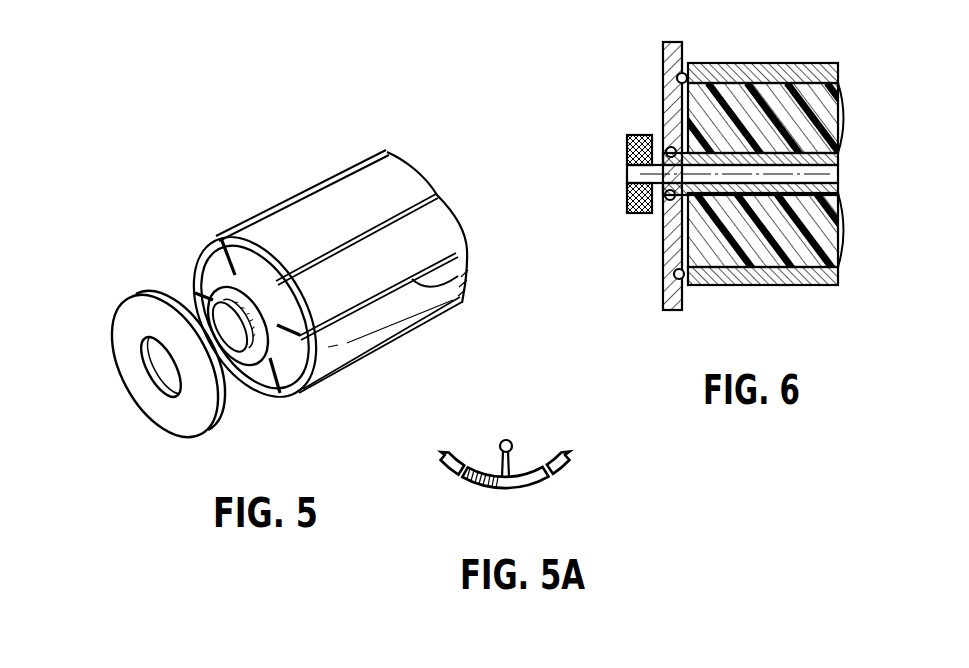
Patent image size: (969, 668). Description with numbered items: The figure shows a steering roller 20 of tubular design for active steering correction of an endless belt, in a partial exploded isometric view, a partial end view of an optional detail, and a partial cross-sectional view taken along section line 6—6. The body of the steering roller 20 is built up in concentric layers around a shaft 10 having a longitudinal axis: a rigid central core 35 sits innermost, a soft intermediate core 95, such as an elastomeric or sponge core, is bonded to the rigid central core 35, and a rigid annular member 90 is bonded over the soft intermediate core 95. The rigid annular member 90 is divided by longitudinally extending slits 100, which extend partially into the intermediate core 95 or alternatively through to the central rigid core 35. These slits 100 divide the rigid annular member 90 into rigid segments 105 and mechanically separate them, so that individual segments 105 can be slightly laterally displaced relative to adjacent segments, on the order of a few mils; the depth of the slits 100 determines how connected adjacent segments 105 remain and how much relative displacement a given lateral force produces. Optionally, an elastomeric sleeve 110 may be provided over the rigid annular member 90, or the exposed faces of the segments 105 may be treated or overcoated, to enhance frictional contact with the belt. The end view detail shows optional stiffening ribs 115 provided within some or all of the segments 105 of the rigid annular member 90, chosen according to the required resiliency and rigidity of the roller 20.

In FIG. 5, the section line 6— 6 is at (262, 398).
In FIG. 5, the steering roller 20 is at (318, 188).
In FIG. 5, the rigid segments 105 is at (395, 177).
In FIG. 5, the soft intermediate core 95 is at (268, 400).
In FIG. 6, the soft intermediate core 95 is at (827, 228).
In FIG. 5, the rigid annular member 90 is at (302, 388).
In FIG. 5A, the rigid annular member 90 is at (540, 482).
In FIG. 6, the rigid annular member 90 is at (739, 278).
In FIG. 5, the longitudinally extending slits 100 is at (463, 274).
In FIG. 5A, the longitudinally extending slits 100 is at (462, 481).
In FIG. 5A, the stiffening ribs 115 is at (513, 446).
In FIG. 6, the elastomeric sleeve 110 is at (748, 62).
In FIG. 6, the rigid central core 35 is at (843, 150).
In FIG. 6, the shaft 10 is at (838, 174).